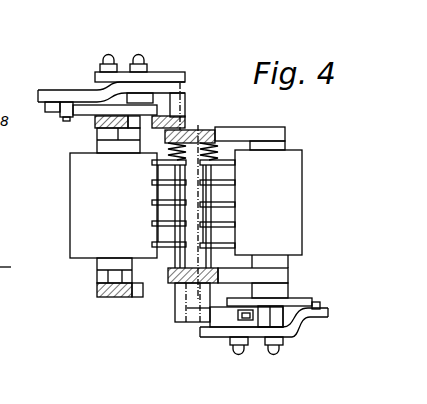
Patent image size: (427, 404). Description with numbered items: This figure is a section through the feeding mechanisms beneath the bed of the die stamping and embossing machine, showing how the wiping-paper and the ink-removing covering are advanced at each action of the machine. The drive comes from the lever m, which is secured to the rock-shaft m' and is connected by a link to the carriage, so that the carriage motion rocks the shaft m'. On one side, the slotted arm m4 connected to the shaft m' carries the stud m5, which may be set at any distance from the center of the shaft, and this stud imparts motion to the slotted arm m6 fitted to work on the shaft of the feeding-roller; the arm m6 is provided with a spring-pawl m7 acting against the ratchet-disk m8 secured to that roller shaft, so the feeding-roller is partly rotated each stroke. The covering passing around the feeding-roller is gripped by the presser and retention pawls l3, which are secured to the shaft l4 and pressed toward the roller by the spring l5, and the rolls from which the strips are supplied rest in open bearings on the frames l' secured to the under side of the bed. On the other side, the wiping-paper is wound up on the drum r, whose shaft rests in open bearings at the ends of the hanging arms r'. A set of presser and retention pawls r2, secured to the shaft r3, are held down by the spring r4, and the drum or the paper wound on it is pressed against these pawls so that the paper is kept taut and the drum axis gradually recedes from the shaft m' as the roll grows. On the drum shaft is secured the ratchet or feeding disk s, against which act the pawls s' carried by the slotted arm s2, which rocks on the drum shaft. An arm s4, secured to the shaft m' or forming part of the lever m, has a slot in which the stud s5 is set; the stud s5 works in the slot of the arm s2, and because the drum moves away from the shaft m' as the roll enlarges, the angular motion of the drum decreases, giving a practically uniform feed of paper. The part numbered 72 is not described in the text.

The ratchet or feeding disk s is at (111, 124).
The pawls s' is at (52, 122).
The slotted arm s2 is at (144, 67).
The arm s4 is at (176, 96).
The stud s5 is at (146, 62).
The lever m is at (191, 109).
The drum r is at (113, 187).
The hanging arms r' is at (108, 279).
The presser and retention pawls r2 is at (169, 214).
The shaft r3 is at (176, 262).
The spring r4 is at (170, 150).
The frames l' is at (275, 218).
The presser and retention pawls l3 is at (217, 214).
The shaft l4 is at (251, 266).
The spring l5 is at (218, 136).
The body 72 is at (268, 202).
The slotted arm m4 is at (176, 307).
The rock-shaft m' is at (183, 347).
The stud m5 is at (256, 354).
The slotted arm m6 is at (225, 334).
The spring-pawl m7 is at (269, 309).
The ratchet-disk m8 is at (291, 298).